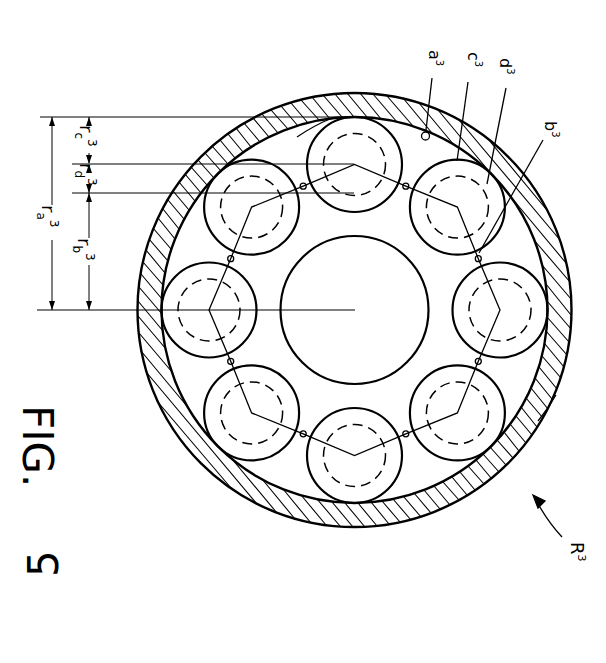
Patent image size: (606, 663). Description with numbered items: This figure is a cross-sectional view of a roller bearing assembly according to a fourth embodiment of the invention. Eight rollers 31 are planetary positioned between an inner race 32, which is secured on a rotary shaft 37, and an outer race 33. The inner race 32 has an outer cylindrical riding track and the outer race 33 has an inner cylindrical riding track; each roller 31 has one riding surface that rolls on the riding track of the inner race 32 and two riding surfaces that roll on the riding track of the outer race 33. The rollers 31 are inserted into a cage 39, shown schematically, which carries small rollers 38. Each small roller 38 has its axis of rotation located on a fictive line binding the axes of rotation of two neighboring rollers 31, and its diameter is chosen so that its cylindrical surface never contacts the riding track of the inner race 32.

The roller 31 is at (346, 147).
The inner race 32 is at (297, 137).
The outer race 33 is at (396, 514).
The rotary shaft 37 is at (538, 421).
The small roller 38 is at (405, 184).
The cage 39 is at (456, 414).